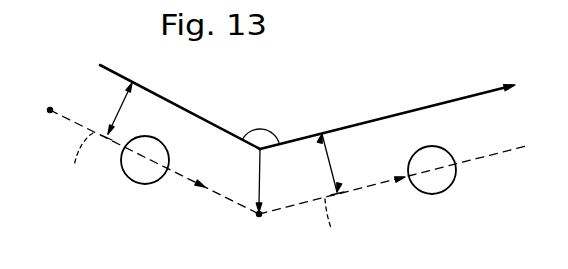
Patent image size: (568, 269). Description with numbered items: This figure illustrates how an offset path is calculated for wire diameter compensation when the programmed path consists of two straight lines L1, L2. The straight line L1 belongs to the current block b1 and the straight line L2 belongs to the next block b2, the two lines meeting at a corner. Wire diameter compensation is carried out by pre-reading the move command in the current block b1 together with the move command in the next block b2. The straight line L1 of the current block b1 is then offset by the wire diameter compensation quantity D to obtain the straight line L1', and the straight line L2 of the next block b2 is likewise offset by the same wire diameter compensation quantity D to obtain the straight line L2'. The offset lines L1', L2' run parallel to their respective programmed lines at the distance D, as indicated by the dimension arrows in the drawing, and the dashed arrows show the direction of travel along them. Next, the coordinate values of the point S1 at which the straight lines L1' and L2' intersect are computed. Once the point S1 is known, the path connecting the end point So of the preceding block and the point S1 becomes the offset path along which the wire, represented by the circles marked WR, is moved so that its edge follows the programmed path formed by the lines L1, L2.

The straight line L1 is at (180, 107).
The straight line L2 is at (387, 116).
The offset straight line L1' is at (79, 160).
The offset straight line L2' is at (336, 225).
The end point of the preceding block So is at (146, 160).
The intersection point S1 is at (260, 195).
The wire diameter compensation quantity D is at (222, 139).
The current block b1 is at (192, 148).
The next block b2 is at (373, 164).
The work roll / tool radius WR is at (145, 174).